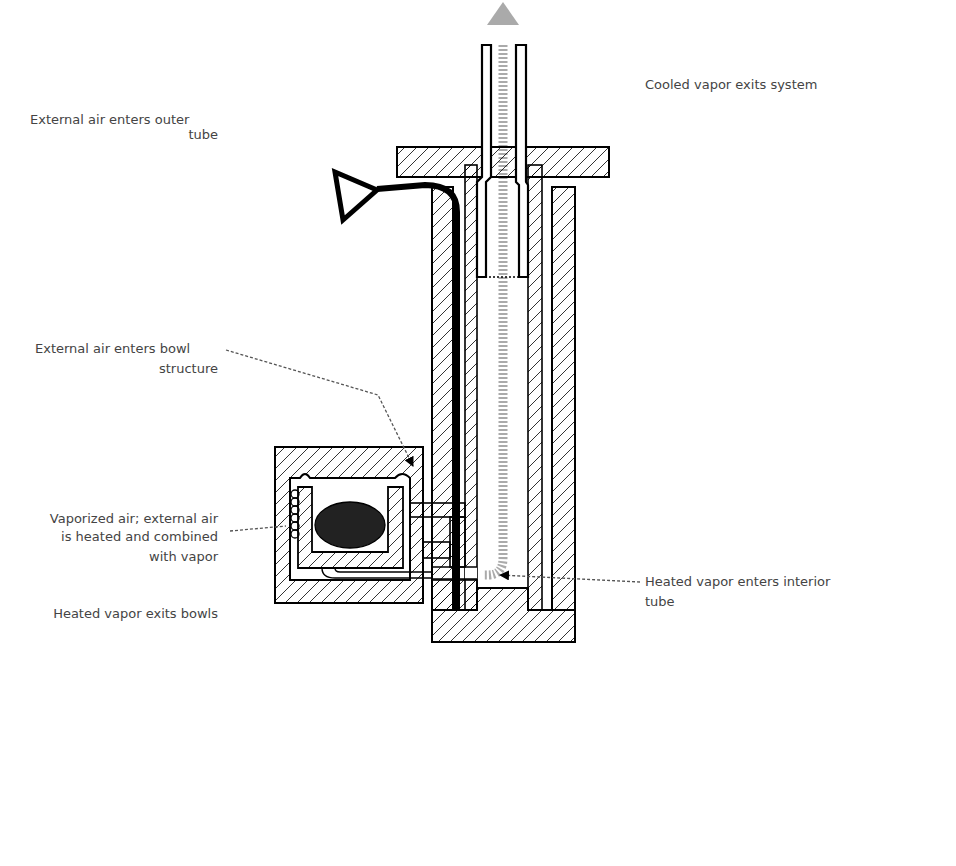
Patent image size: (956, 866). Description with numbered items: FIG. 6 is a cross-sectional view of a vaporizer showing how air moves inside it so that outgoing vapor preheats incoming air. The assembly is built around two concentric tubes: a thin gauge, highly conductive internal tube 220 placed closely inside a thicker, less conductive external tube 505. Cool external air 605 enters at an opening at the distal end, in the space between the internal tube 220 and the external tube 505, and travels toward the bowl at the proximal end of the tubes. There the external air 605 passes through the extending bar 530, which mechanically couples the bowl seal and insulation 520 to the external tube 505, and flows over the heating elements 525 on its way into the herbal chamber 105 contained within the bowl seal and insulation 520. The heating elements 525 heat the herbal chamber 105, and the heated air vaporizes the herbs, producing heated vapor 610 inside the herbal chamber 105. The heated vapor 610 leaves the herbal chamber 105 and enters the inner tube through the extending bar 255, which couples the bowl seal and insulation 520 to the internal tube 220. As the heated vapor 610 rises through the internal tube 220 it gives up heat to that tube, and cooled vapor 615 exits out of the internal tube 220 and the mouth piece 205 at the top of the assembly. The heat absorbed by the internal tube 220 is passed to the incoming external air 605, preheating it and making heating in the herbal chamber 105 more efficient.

The herbal chamber 105 is at (305, 580).
The mouth piece 205 is at (483, 97).
The internal tube 220 is at (543, 530).
The extending bar 255 is at (450, 583).
The external tube 505 is at (558, 435).
The bowl seal and insulation 520 is at (284, 478).
The heating elements 525 is at (291, 503).
The extending bar 530 is at (440, 510).
The external air 605 is at (380, 177).
The heated vapor 610 is at (338, 506).
The cooled vapor 615 is at (512, 103).